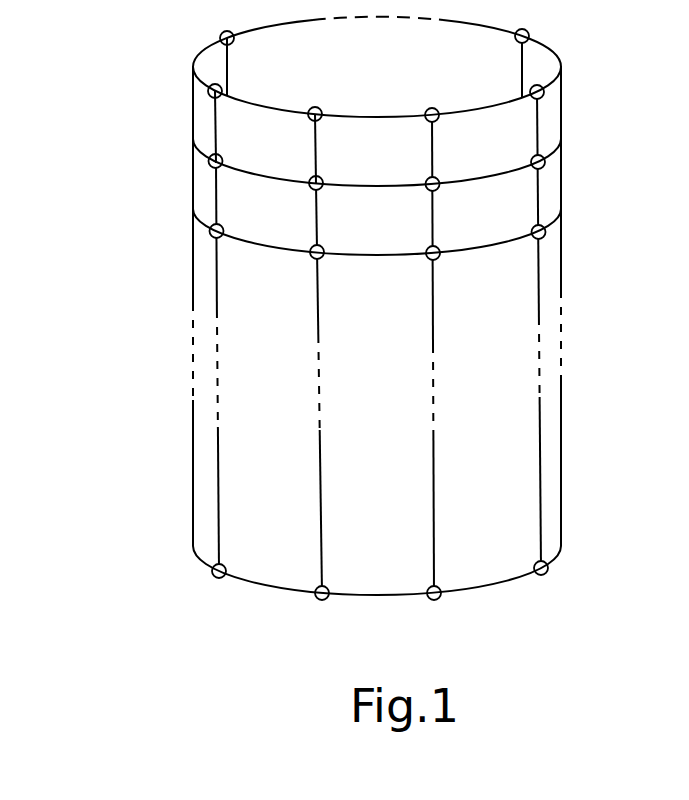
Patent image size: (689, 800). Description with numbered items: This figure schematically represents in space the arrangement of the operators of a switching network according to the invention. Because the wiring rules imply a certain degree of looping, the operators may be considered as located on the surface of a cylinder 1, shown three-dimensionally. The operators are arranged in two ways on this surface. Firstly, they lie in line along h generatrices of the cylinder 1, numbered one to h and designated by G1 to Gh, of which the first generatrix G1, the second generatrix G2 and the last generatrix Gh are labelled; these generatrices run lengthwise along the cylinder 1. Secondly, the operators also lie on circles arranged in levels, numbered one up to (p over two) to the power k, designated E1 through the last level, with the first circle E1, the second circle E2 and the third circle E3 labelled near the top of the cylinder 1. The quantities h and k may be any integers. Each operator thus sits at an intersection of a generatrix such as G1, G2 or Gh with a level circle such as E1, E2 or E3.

The cylinder 1 is at (555, 450).
The first level circle E1 is at (193, 62).
The second level circle E2 is at (193, 134).
The third level circle E3 is at (193, 210).
The h-th generatrix Gh is at (229, 75).
The first generatrix G1 is at (216, 134).
The second generatrix G2 is at (318, 168).